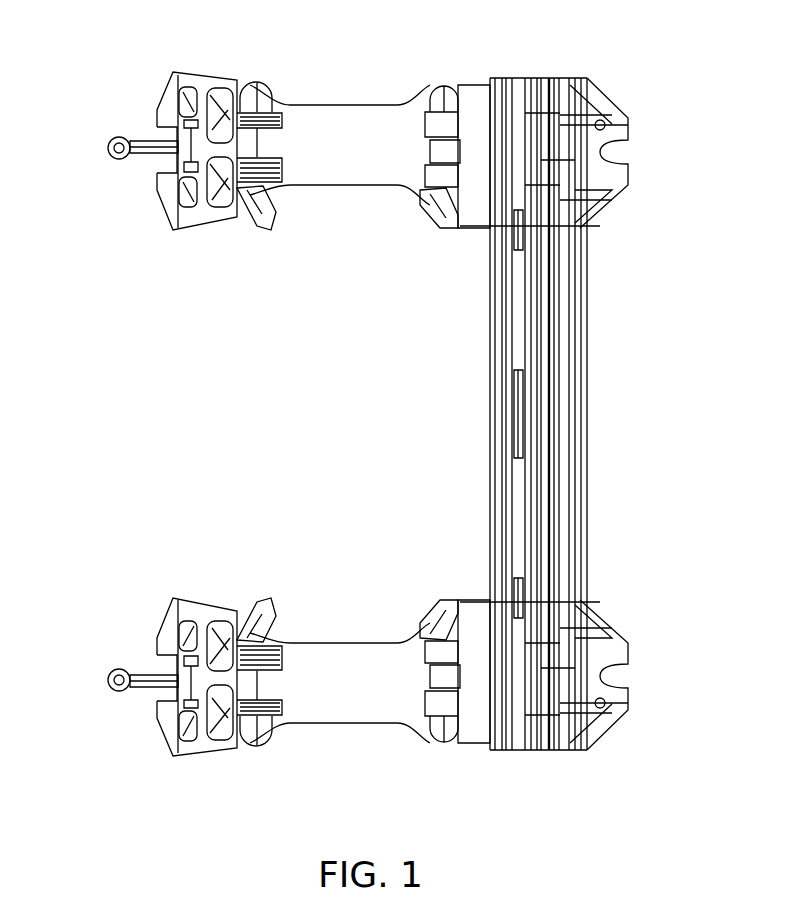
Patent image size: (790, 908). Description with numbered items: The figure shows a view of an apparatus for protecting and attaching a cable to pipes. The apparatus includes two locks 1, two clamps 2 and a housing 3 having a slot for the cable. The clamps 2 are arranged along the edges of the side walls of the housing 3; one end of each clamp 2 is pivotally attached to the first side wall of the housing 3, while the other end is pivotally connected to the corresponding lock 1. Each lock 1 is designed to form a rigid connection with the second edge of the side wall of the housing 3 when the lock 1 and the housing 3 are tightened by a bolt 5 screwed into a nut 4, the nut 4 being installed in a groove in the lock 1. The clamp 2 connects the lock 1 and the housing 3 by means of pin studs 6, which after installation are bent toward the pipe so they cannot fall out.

The lock 1 is at (207, 212).
The clamp 2 is at (357, 135).
The housing 3 is at (585, 418).
The nut 4 is at (160, 137).
The bolt 5 is at (143, 152).
The pin stud 6 is at (295, 104).